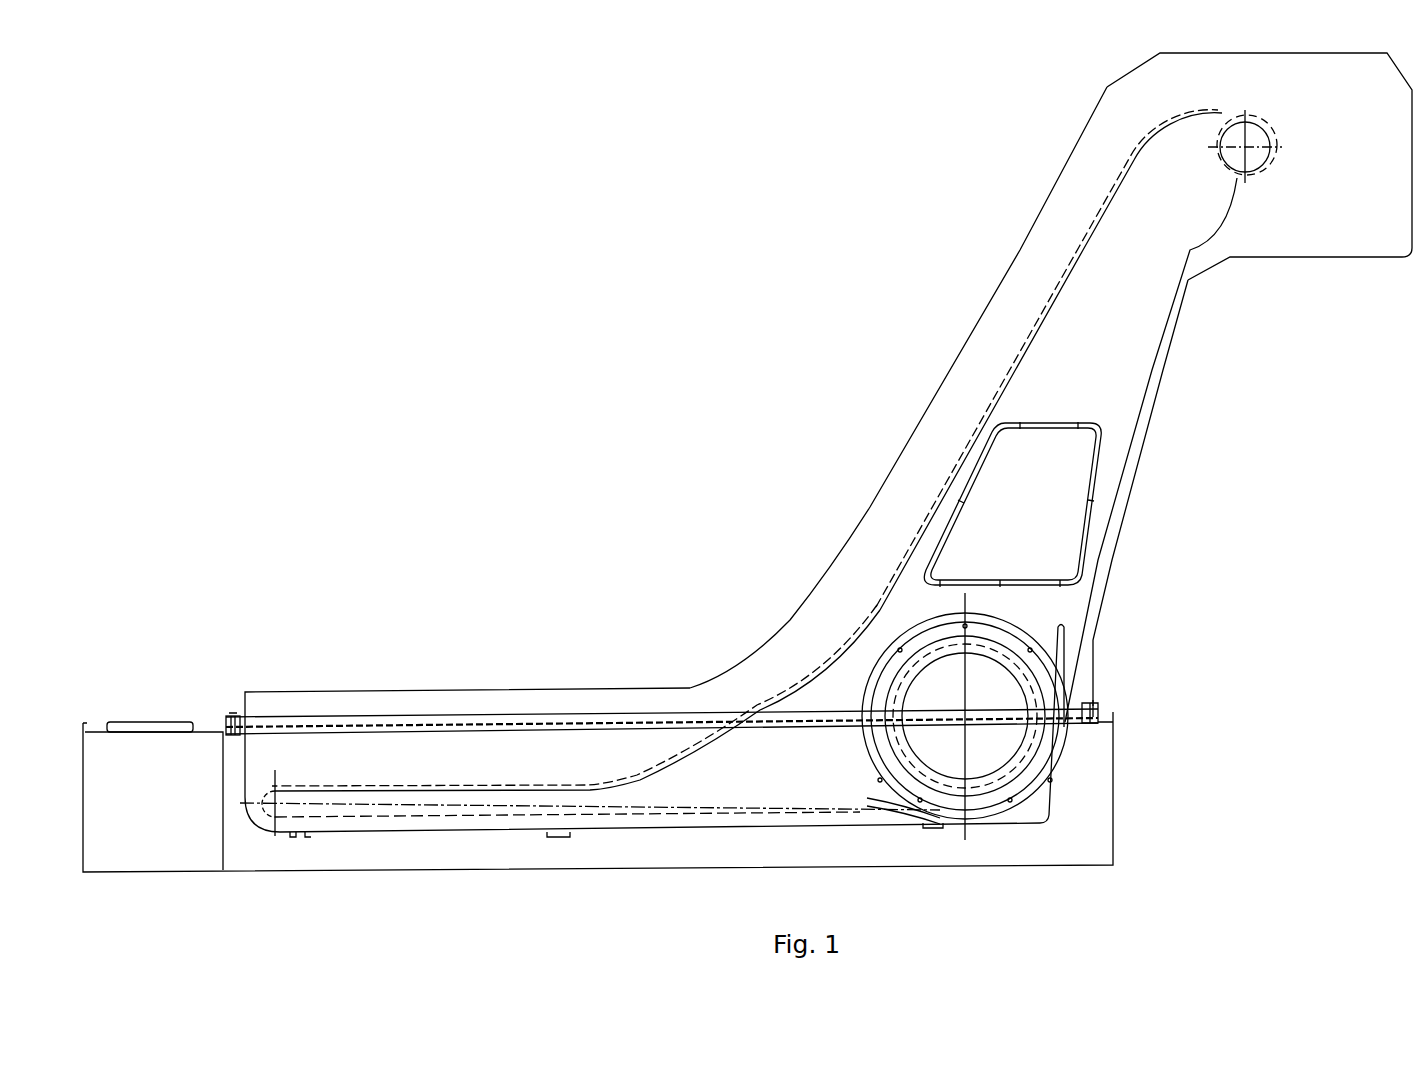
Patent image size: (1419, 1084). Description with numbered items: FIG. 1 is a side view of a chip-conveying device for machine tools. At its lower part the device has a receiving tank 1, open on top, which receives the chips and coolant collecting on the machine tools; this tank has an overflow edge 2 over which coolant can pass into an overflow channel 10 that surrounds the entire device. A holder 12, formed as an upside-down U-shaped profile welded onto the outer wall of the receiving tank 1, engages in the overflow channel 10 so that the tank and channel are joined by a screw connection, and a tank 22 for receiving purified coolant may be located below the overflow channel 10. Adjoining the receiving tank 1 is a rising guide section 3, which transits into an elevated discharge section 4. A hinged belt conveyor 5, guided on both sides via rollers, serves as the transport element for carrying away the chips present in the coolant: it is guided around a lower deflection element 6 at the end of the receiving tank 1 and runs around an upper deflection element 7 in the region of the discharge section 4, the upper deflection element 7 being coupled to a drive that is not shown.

The receiving tank 1 is at (662, 735).
The overflow edge 2 is at (370, 690).
The rising guide section 3 is at (956, 324).
The elevated discharge section 4 is at (1318, 264).
The hinged belt conveyor 5 is at (625, 815).
The lower deflection element 6 is at (275, 800).
The upper deflection element 7 is at (1243, 147).
The overflow channel 10 is at (97, 720).
The holder 12 is at (223, 726).
The tank 22 is at (162, 828).